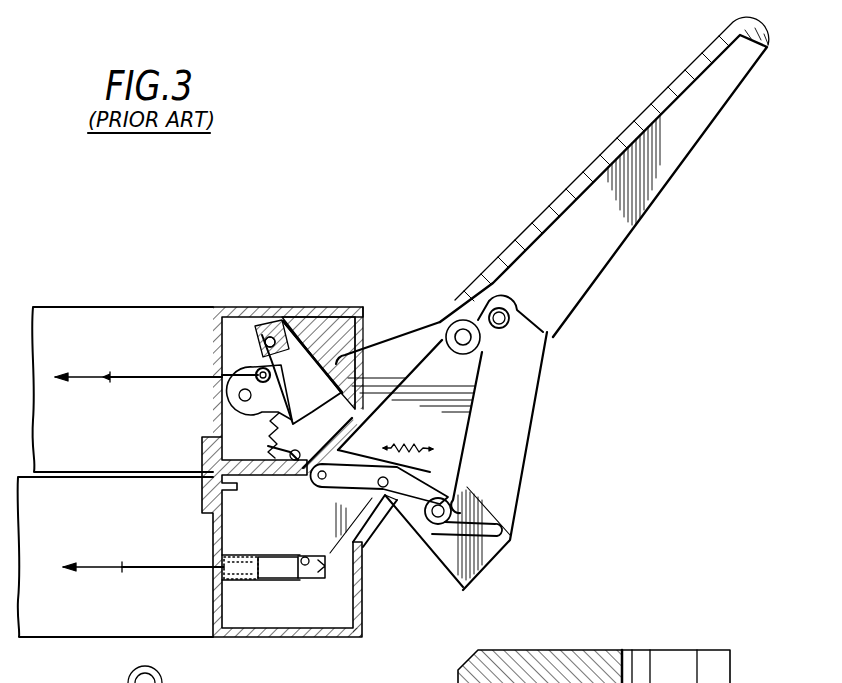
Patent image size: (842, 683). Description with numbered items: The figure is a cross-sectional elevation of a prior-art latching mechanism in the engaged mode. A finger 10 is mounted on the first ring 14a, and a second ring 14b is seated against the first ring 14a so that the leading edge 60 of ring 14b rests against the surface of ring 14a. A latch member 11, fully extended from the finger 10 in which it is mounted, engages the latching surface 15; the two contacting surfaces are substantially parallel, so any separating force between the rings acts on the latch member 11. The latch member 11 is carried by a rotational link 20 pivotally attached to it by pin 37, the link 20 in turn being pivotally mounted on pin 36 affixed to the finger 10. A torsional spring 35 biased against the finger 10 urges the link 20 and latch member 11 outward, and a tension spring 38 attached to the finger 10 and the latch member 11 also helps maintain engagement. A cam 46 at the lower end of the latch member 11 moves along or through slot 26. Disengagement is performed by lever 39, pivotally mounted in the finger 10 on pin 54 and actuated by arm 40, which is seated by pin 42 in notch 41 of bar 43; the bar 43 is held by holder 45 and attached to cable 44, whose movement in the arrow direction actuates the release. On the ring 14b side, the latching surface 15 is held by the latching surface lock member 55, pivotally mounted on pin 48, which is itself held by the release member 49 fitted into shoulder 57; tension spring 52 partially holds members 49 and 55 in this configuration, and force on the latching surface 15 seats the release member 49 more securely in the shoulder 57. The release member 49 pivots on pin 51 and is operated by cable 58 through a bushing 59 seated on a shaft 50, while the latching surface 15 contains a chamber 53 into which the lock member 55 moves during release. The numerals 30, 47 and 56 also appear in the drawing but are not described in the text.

The finger 10 is at (697, 112).
The latch member 11 is at (420, 328).
The first ring 14a is at (50, 637).
The second ring 14b is at (84, 307).
The latching surface 15 is at (318, 400).
The rotational link 20 is at (492, 302).
The slot 26 is at (497, 535).
The plunger housing channel 30 is at (224, 580).
The torsional spring 35 is at (512, 310).
The pin 36 is at (508, 325).
The pin 37 is at (456, 322).
The tension spring 38 is at (422, 444).
The lever 39 is at (430, 480).
The arm 40 is at (372, 548).
The notch 41 is at (326, 580).
The pin 42 is at (305, 567).
The bar 43 is at (275, 580).
The cable 44 is at (142, 572).
The holder 45 is at (248, 582).
The cam 46 is at (438, 524).
The pivot pin 47 is at (274, 337).
The pin 48 is at (210, 504).
The release member 49 is at (240, 420).
The shaft 50 is at (256, 379).
The pin 51 is at (241, 399).
The tension spring 52 is at (270, 452).
The chamber 53 is at (256, 330).
The pin 54 is at (322, 487).
The latching surface lock member 55 is at (340, 440).
The guide surface 56 is at (390, 500).
The shoulder 57 is at (348, 318).
The cable 58 is at (165, 374).
The bushing 59 is at (258, 372).
The leading edge 60 is at (294, 462).